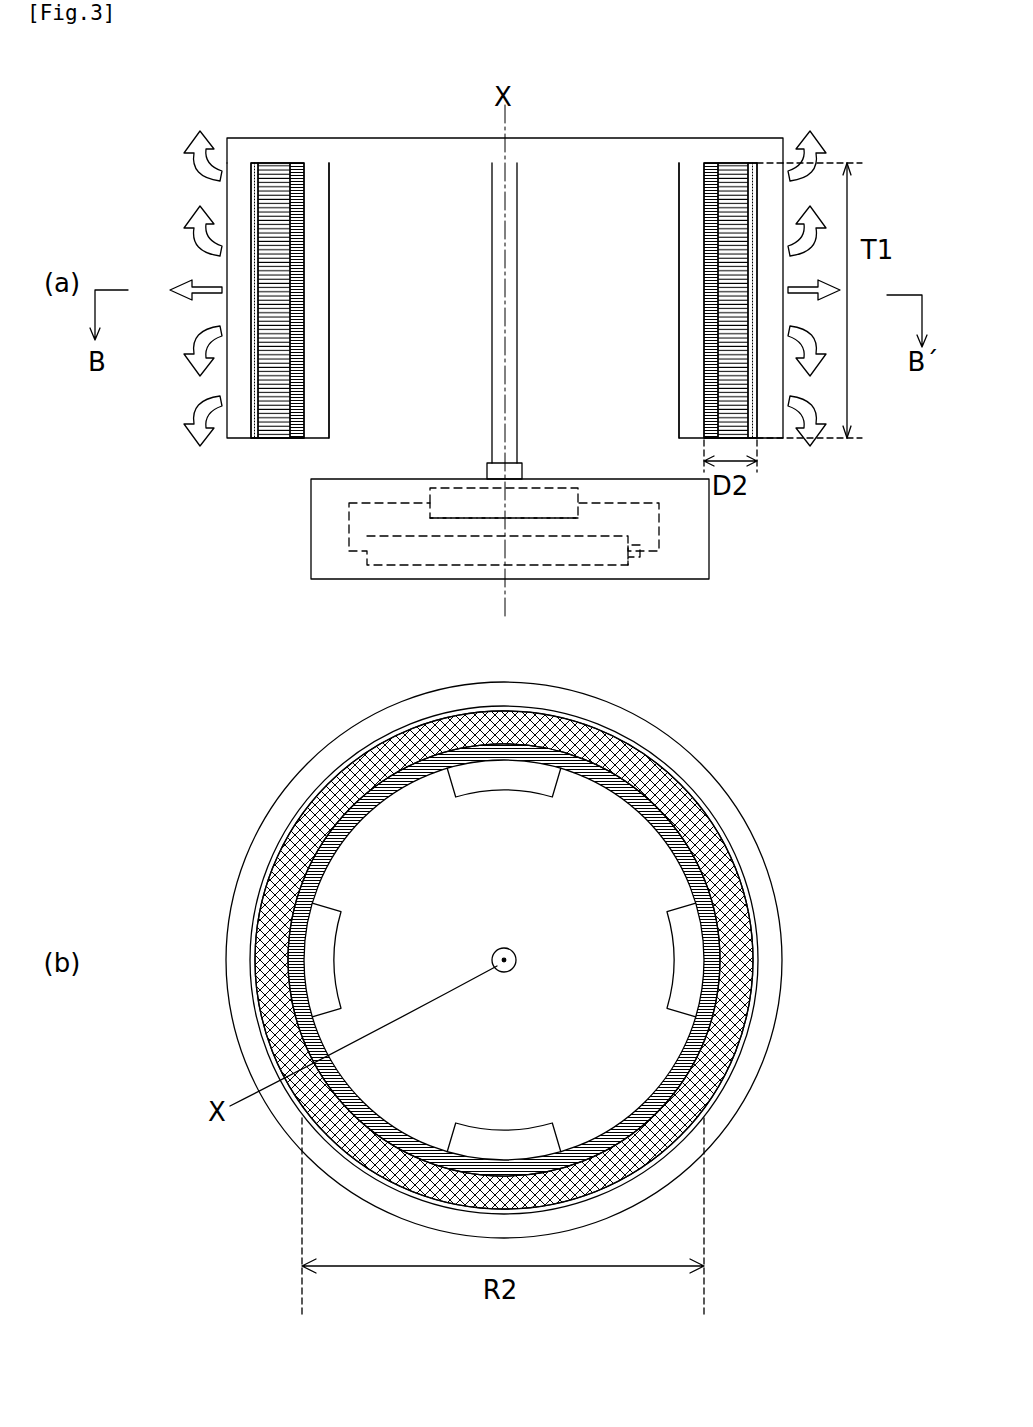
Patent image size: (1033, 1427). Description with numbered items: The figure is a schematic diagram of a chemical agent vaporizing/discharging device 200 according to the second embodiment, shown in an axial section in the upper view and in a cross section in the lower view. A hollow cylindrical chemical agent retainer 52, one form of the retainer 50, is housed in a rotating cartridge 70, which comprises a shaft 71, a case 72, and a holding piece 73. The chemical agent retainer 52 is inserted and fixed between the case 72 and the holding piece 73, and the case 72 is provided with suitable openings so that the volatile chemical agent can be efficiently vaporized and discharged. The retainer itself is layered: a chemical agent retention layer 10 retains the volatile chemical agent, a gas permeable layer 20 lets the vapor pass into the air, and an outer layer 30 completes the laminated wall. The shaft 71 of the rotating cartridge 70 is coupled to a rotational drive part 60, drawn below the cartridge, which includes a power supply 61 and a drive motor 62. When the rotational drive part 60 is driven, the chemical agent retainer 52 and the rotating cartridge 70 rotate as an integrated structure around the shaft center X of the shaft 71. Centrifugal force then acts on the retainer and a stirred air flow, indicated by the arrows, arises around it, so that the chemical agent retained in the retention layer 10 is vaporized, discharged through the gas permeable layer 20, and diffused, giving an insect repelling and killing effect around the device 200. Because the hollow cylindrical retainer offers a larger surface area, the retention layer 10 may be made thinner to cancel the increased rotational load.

The chemical agent vaporizing/discharging device 200 is at (848, 131).
The rotating cartridge 70 is at (681, 130).
The shaft 71 is at (509, 290).
The case 72 is at (233, 305).
The holding piece 73 is at (313, 268).
The chemical agent retention layer 10 is at (297, 433).
The gas permeable layer 20 is at (270, 430).
The outer layer 30 is at (253, 428).
The stator 50 is at (443, 521).
The chemical agent retainer 52 is at (729, 445).
The rotational drive part 60 is at (714, 527).
The power supply 61 is at (421, 549).
The drive motor 62 is at (478, 510).